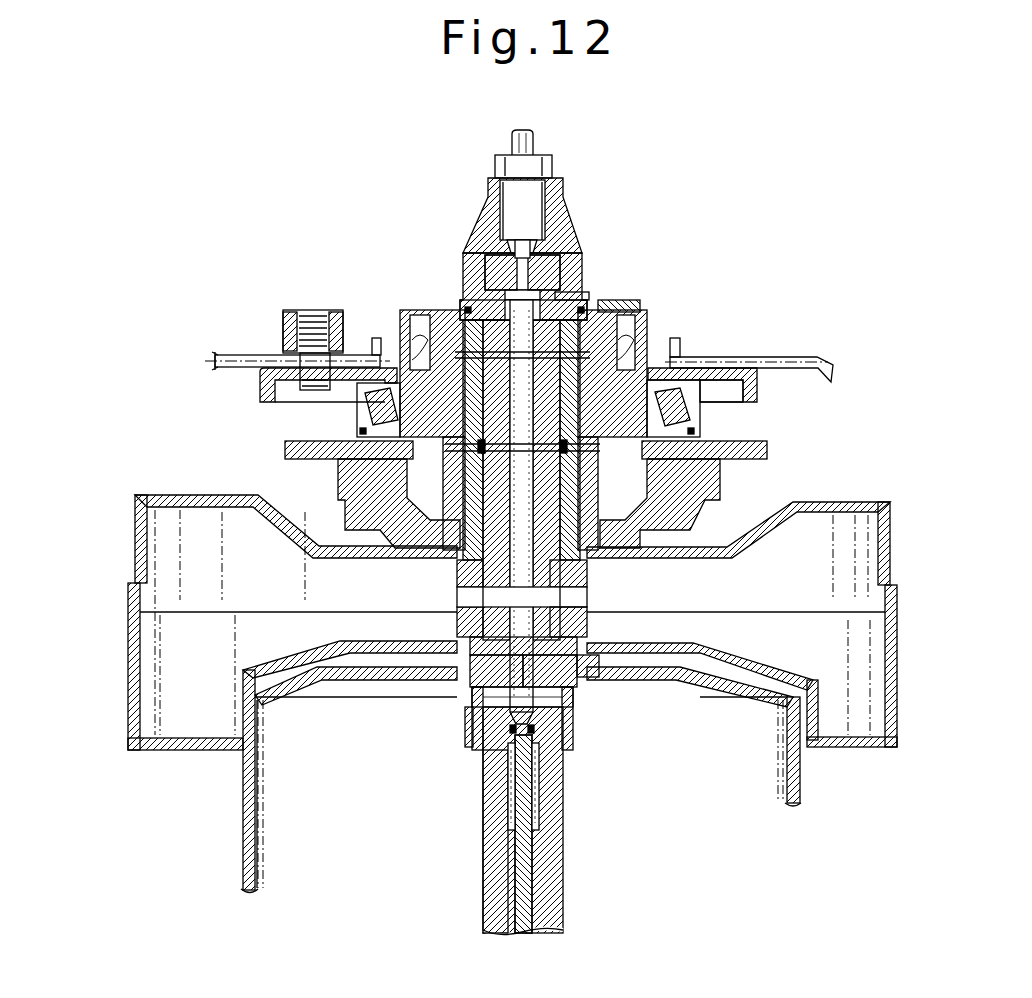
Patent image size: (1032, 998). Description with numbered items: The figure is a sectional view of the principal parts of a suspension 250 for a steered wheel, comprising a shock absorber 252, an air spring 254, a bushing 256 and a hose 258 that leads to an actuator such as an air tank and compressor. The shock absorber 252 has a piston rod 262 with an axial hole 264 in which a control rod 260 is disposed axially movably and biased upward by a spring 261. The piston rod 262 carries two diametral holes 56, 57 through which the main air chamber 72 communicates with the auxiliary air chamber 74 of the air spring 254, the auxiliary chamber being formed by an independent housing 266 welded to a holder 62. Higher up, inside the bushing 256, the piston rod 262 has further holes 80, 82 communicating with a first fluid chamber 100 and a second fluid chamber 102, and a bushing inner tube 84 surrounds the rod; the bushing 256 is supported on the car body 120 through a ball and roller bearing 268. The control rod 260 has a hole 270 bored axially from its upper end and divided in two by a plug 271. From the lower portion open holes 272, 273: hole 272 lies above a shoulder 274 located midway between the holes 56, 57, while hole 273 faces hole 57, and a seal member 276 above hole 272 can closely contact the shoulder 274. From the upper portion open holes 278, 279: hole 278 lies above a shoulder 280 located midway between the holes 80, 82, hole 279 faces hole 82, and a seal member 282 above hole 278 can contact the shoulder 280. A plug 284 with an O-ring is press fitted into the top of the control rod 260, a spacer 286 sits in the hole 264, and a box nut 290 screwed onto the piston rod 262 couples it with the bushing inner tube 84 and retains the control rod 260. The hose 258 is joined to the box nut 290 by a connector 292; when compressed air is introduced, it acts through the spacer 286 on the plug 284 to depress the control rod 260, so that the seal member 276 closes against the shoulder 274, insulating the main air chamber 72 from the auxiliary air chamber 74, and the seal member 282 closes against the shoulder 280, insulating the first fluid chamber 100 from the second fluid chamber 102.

The upper hole 56 is at (578, 602).
The lower hole 57 is at (578, 700).
The holder 62 is at (600, 660).
The main air chamber 72 is at (275, 870).
The auxiliary air chamber 74 is at (321, 738).
The hole 80 is at (632, 322).
The hole 82 is at (620, 545).
The bushing inner tube 84 is at (628, 305).
The first fluid chamber 100 is at (655, 366).
The second fluid chamber 102 is at (718, 372).
The car body 120 is at (795, 355).
The suspension 250 is at (208, 434).
The shock absorber 252 is at (570, 907).
The air spring 254 is at (240, 805).
The bushing 256 is at (392, 335).
The hose 258 is at (530, 145).
The control rod 260 is at (542, 860).
The spring 261 is at (540, 800).
The piston rod 262 is at (495, 900).
The axial hole 264 is at (510, 790).
The housing 266 is at (170, 748).
The ball and roller bearing 268 is at (700, 415).
The hole 270 is at (590, 300).
The plug 271 is at (456, 585).
The hole 272 is at (458, 662).
The hole 273 is at (467, 717).
The shoulder 274 is at (612, 690).
The seal member 276 is at (590, 628).
The hole 278 is at (466, 300).
The hole 279 is at (445, 542).
The shoulder 280 is at (668, 540).
The seal member 282 is at (455, 320).
The plug 284 is at (568, 268).
The spacer 286 is at (478, 248).
The box nut 290 is at (565, 212).
The connector 292 is at (555, 168).